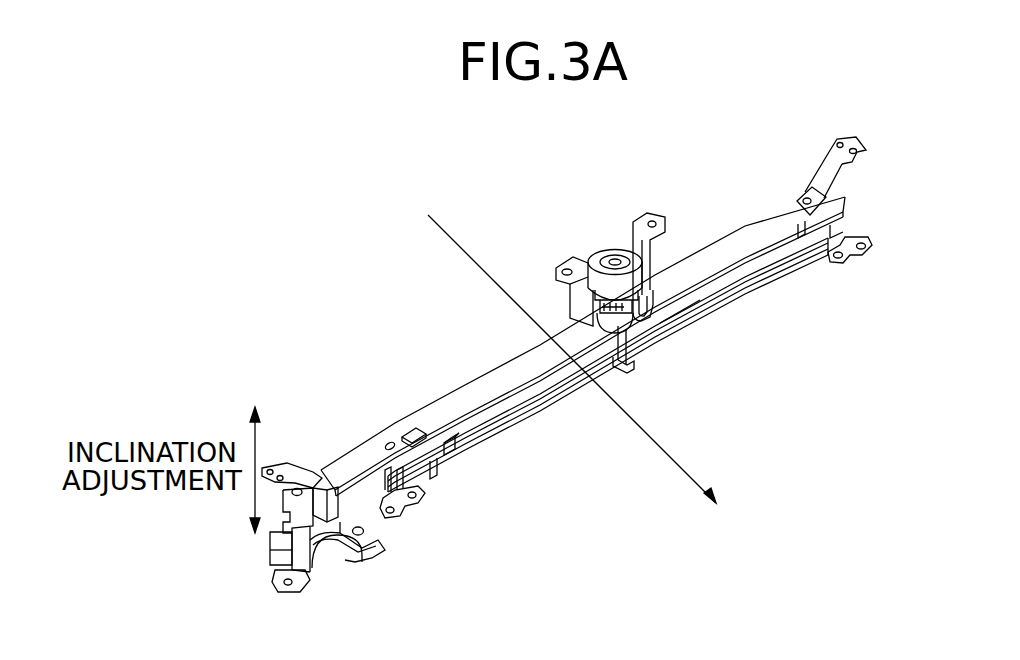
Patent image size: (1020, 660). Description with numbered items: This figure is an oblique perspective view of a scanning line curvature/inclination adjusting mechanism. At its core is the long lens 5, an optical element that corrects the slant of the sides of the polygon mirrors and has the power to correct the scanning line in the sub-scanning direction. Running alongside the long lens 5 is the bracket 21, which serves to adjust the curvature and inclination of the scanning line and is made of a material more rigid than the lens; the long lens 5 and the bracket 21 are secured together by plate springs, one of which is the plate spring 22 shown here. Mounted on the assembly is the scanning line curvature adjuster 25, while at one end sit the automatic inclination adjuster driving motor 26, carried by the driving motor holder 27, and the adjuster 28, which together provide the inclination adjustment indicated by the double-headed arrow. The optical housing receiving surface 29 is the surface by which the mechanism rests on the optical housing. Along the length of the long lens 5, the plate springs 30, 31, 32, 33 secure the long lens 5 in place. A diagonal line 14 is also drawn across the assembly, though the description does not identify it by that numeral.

The long lens 5 is at (527, 398).
The optical axis / scanning direction line 14 is at (581, 359).
The bracket 21 is at (465, 400).
The plate spring 22 is at (643, 346).
The scanning line curvature adjuster 25 is at (612, 252).
The automatic inclination adjuster driving motor 26 is at (330, 555).
The driving motor holder 27 is at (278, 580).
The adjuster 28 is at (327, 472).
The optical housing receiving surface 29 is at (686, 333).
The plate spring 30 is at (412, 516).
The plate spring 31 is at (848, 263).
The plate spring 32 is at (316, 471).
The plate spring 33 is at (830, 163).